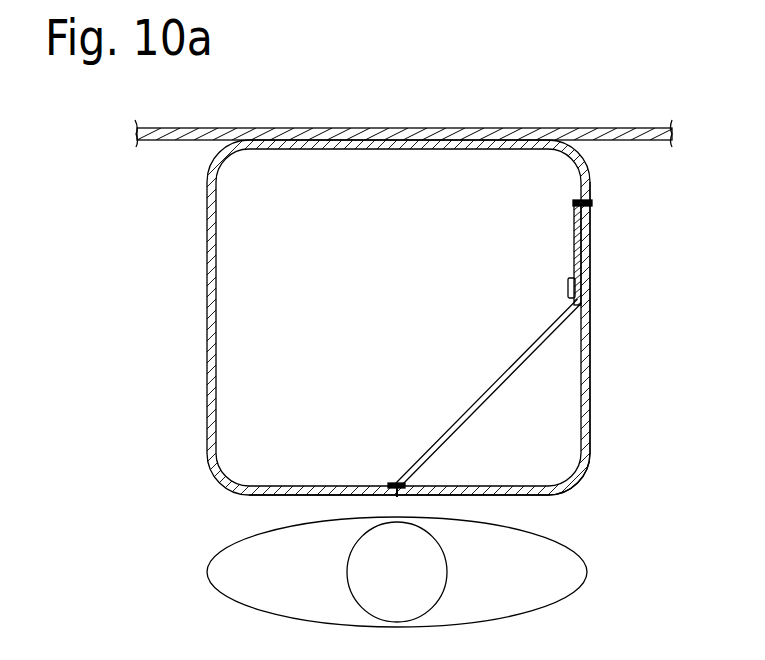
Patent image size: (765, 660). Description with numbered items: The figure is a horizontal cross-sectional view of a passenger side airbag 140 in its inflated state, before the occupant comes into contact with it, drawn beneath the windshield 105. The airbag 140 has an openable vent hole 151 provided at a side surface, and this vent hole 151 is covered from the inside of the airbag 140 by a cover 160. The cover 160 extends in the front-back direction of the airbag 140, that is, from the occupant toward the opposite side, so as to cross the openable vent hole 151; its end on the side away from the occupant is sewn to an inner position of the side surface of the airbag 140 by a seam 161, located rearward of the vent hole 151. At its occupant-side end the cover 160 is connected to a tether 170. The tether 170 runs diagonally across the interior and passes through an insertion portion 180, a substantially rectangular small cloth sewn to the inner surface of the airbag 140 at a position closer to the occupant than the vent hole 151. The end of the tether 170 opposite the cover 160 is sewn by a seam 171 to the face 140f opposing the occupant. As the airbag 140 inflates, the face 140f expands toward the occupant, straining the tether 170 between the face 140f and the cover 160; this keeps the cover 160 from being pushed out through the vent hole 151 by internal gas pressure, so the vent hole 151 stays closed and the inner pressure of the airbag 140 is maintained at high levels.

The windshield 105 is at (632, 128).
The passenger side airbag 140 is at (192, 362).
The face opposing the occupant 140f is at (503, 492).
The openable vent hole 151 is at (591, 262).
The cover 160 is at (574, 248).
The seam 161 is at (574, 203).
The tether 170 is at (472, 408).
The seam 171 is at (397, 482).
The insertion portion 180 is at (568, 290).